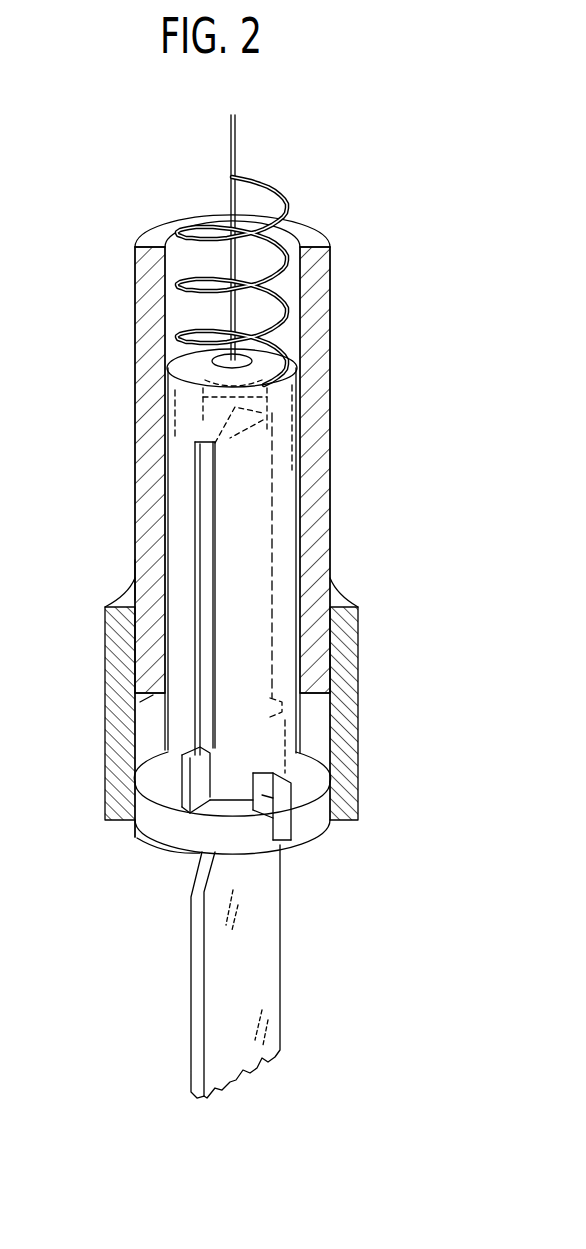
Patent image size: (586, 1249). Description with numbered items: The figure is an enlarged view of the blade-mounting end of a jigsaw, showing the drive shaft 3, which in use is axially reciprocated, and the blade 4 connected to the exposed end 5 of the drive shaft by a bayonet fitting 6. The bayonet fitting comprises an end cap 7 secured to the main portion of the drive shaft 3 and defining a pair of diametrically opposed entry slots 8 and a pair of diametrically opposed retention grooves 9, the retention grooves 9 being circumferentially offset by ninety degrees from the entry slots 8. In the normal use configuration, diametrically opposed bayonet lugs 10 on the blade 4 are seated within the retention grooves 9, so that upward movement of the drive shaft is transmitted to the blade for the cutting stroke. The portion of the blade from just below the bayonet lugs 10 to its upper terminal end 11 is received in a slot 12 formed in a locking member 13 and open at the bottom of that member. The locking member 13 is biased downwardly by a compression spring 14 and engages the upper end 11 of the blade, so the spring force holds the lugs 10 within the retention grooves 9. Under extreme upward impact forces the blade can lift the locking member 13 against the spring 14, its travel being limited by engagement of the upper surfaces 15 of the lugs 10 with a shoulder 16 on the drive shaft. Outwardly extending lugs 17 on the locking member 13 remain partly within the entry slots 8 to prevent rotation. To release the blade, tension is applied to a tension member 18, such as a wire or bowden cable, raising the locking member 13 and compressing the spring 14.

The drive shaft 3 is at (315, 458).
The blade 4 is at (255, 992).
The exposed end 5 is at (147, 568).
The bayonet fitting 6 is at (122, 831).
The end cap 7 is at (117, 641).
The entry slots 8 is at (287, 838).
The retention grooves 9 is at (173, 840).
The bayonet lugs 10 is at (140, 779).
The upper terminal end 11 is at (200, 420).
The slot 12 is at (200, 495).
The locking member 13 is at (290, 515).
The compression spring 14 is at (283, 200).
The upper surfaces 15 is at (182, 757).
The shoulder 16 is at (153, 697).
The outwardly extending lugs 17 is at (283, 818).
The tension member 18 is at (230, 135).